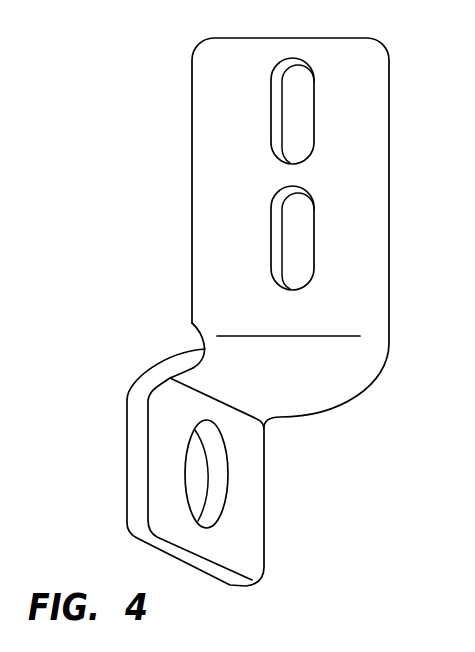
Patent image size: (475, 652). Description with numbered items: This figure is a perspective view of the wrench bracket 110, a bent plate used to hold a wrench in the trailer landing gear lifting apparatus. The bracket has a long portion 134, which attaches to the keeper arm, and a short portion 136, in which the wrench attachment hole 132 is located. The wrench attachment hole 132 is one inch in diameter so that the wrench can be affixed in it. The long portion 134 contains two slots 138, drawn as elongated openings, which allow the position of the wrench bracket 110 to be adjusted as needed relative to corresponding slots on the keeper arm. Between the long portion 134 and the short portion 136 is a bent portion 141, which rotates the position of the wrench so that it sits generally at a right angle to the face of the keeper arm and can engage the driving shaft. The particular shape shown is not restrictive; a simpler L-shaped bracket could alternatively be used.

The wrench bracket 110 is at (251, 312).
The wrench attachment hole 132 is at (197, 480).
The long portion 134 is at (333, 241).
The short portion 136 is at (182, 467).
The slots 138 is at (297, 131).
The bent portion 141 is at (342, 382).